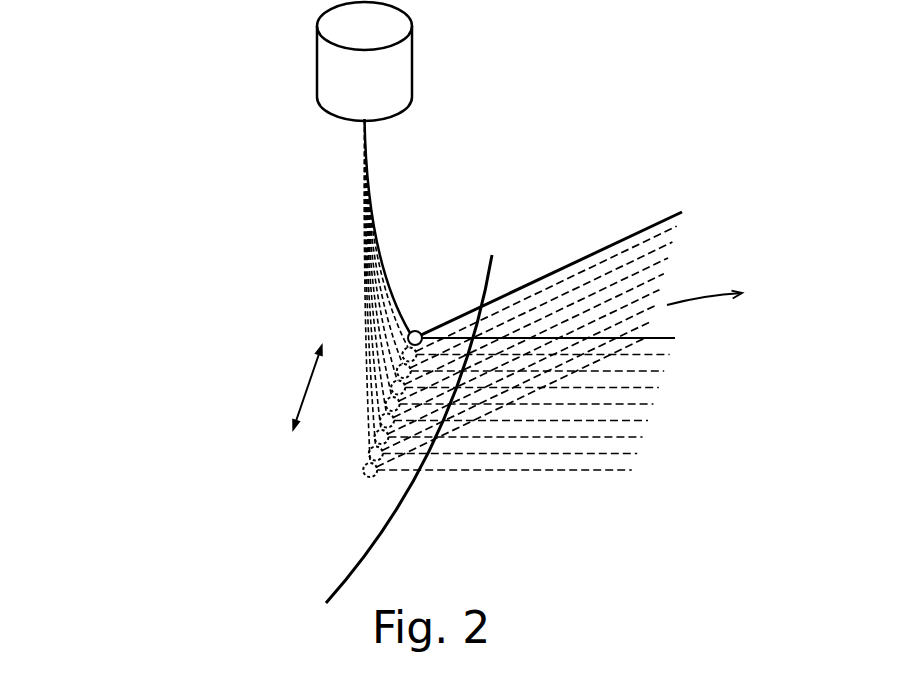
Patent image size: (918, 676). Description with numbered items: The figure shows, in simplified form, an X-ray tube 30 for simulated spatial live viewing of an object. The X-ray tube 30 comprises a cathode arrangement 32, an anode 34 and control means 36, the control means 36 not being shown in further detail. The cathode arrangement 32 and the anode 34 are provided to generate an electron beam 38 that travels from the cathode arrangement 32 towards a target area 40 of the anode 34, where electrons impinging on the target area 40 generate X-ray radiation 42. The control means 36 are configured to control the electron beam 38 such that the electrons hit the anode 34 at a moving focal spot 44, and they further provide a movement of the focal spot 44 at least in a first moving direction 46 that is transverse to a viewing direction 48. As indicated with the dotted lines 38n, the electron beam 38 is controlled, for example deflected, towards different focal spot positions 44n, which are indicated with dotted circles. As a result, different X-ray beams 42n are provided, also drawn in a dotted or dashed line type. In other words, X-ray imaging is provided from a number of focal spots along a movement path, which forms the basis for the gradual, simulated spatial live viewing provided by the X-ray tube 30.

The X-ray tube 30 is at (268, 46).
The cathode arrangement 32 is at (412, 66).
The anode 34 is at (350, 558).
The control means 36 is at (308, 143).
The electron beam 38 is at (376, 225).
The dotted lines 38n is at (360, 262).
The target area 40 is at (482, 240).
The X-ray radiation 42 is at (615, 238).
The X-ray beams 42n is at (468, 472).
The focal spot 44 is at (419, 331).
The focal spot positions 44n is at (365, 450).
The first moving direction 46 is at (305, 385).
The viewing direction 48 is at (714, 295).